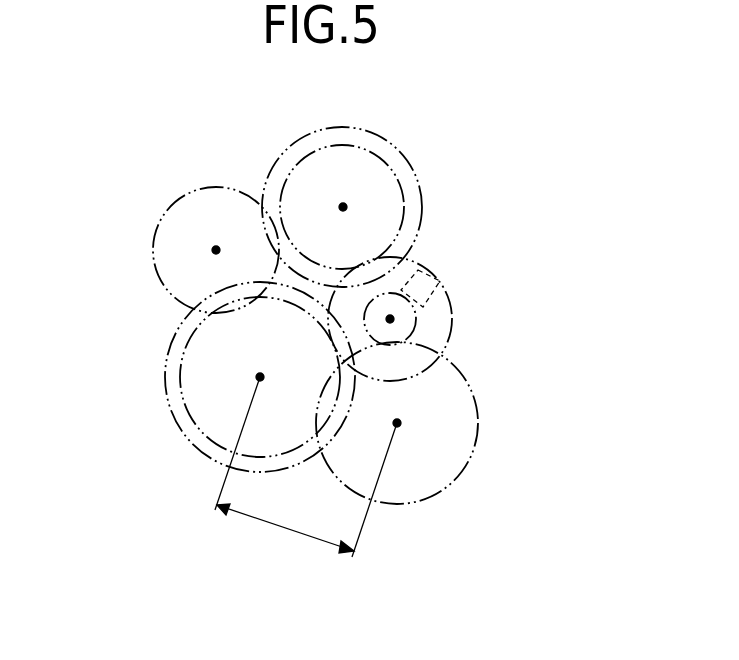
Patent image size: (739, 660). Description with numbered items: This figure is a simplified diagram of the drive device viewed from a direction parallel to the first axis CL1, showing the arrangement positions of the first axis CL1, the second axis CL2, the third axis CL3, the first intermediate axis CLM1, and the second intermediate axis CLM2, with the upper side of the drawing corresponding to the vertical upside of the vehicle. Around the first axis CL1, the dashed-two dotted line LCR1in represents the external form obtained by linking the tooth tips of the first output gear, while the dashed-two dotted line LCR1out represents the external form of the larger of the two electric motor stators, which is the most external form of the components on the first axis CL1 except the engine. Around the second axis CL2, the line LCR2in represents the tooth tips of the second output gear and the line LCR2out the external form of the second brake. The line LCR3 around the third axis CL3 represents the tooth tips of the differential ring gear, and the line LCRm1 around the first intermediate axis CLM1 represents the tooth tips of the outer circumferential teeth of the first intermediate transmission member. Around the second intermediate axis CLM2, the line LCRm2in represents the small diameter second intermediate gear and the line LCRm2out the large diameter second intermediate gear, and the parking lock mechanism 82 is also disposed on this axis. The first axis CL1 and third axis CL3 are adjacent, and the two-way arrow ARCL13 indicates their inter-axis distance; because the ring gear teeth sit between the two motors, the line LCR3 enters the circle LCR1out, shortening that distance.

The dashed-two dotted line around the second axis LCR2in is at (303, 158).
The dashed-two dotted line around the second axis LCR2out is at (400, 150).
The second axis CL2 is at (346, 207).
The dashed-two dotted line around the first intermediate axis LCRm1 is at (160, 226).
The first intermediate axis CLM1 is at (216, 250).
The parking lock mechanism 82 is at (440, 272).
The dashed-two dotted line around the second intermediate axis LCRm2out is at (452, 305).
The second intermediate axis CLM2 is at (394, 319).
The dashed-two dotted line around the second intermediate axis LCRm2in is at (414, 330).
The first axis CL1 is at (260, 377).
The dashed-two dotted line around the first axis LCR1out is at (165, 353).
The dashed-two dotted line around the first axis LCR1in is at (186, 420).
The third axis CL3 is at (397, 422).
The dashed-two dotted line around the third axis LCR3 is at (462, 478).
The two-way arrow ARCL13 is at (288, 530).